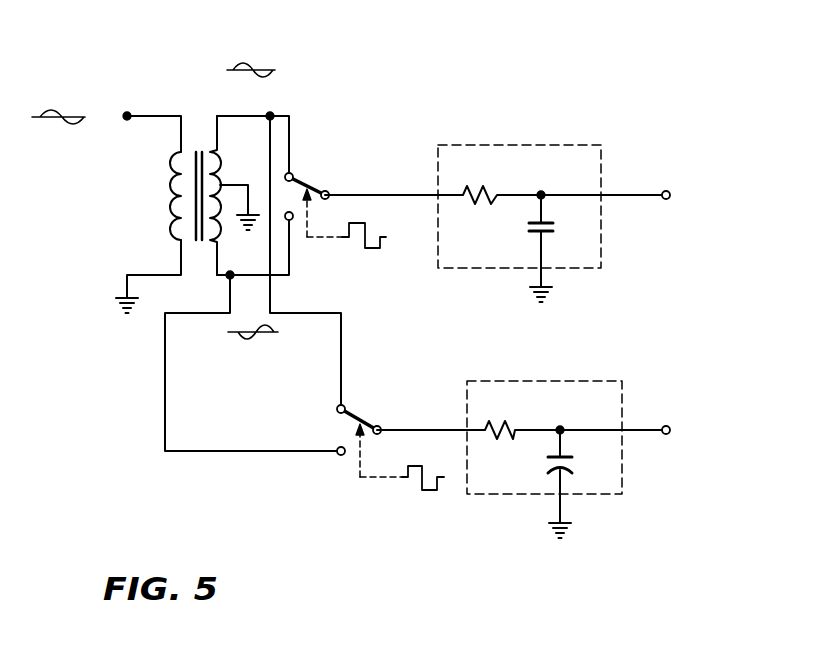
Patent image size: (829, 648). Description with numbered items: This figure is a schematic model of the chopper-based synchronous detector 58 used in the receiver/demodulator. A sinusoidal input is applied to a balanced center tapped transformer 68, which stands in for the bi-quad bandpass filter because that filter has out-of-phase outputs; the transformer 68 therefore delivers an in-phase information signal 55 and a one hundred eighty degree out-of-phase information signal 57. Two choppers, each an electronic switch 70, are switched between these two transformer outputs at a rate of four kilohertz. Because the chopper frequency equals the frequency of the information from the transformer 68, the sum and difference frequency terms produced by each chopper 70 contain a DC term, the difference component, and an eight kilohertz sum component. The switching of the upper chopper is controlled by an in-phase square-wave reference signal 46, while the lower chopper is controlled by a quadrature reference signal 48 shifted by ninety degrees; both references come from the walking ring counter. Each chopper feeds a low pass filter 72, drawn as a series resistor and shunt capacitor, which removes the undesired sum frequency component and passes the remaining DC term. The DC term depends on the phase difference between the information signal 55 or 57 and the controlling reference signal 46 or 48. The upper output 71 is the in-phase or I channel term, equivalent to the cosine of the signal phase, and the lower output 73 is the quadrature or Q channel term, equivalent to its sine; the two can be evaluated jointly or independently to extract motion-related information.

The synchronous detector 58 is at (363, 29).
The information signal 55 is at (275, 70).
The information signal 57 is at (278, 331).
The center tapped transformer 68 is at (207, 135).
The chopper 70 is at (327, 192).
The reference signal 46 is at (369, 237).
The reference signal 48 is at (430, 477).
The low pass filter 72 is at (588, 138).
The I channel output 71 is at (625, 194).
The Q channel output 73 is at (645, 428).